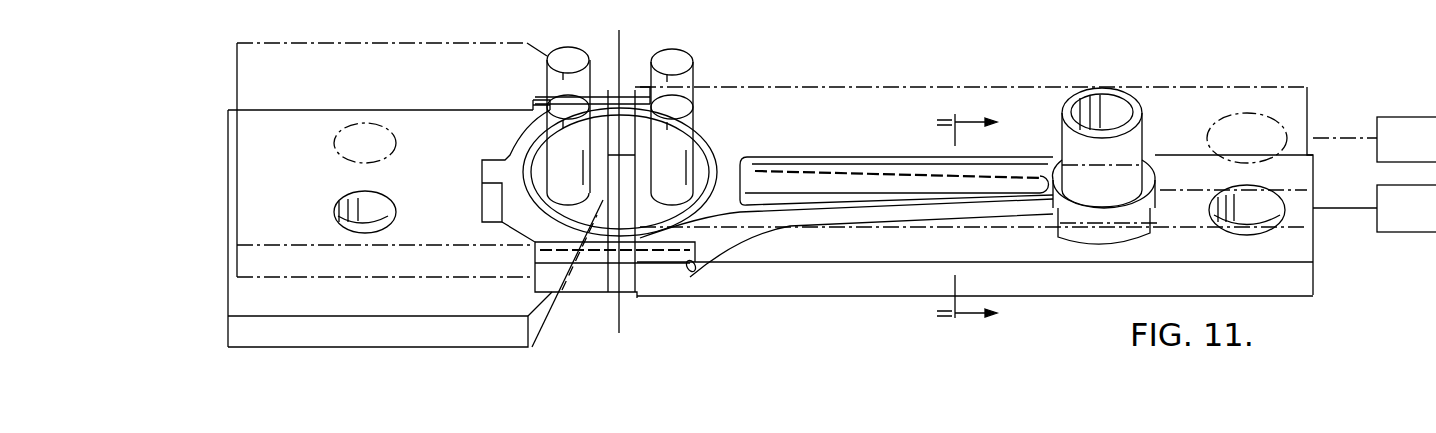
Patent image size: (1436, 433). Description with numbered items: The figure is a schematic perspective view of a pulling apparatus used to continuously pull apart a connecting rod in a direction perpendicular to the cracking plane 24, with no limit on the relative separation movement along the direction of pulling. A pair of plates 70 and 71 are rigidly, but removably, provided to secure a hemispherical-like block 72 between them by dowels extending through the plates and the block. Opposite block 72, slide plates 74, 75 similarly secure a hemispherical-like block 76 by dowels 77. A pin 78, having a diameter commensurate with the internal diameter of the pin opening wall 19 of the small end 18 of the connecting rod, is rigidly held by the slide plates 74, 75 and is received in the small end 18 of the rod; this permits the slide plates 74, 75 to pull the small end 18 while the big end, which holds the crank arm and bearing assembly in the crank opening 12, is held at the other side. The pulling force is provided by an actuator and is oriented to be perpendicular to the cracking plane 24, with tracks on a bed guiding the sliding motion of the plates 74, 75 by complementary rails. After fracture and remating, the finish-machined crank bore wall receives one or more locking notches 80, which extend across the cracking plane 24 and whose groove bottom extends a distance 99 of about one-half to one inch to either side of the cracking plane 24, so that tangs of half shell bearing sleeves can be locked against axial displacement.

The small end 18 is at (1092, 228).
The cylindrical bearing wall 19 is at (1140, 225).
The cracking plane 24 is at (619, 43).
The plate 70 is at (253, 222).
The plate 71 is at (250, 300).
The hemispherical-like block 72 is at (600, 225).
The slide plate 74 is at (1313, 105).
The slide plate 75 is at (556, 107).
The hemispherical-like block 76 is at (652, 212).
The dowels 77 is at (705, 120).
The pin 78 is at (1125, 160).
The locking notches 80 is at (1337, 208).
The distance 99 is at (1422, 151).
The crank opening 12 is at (984, 229).